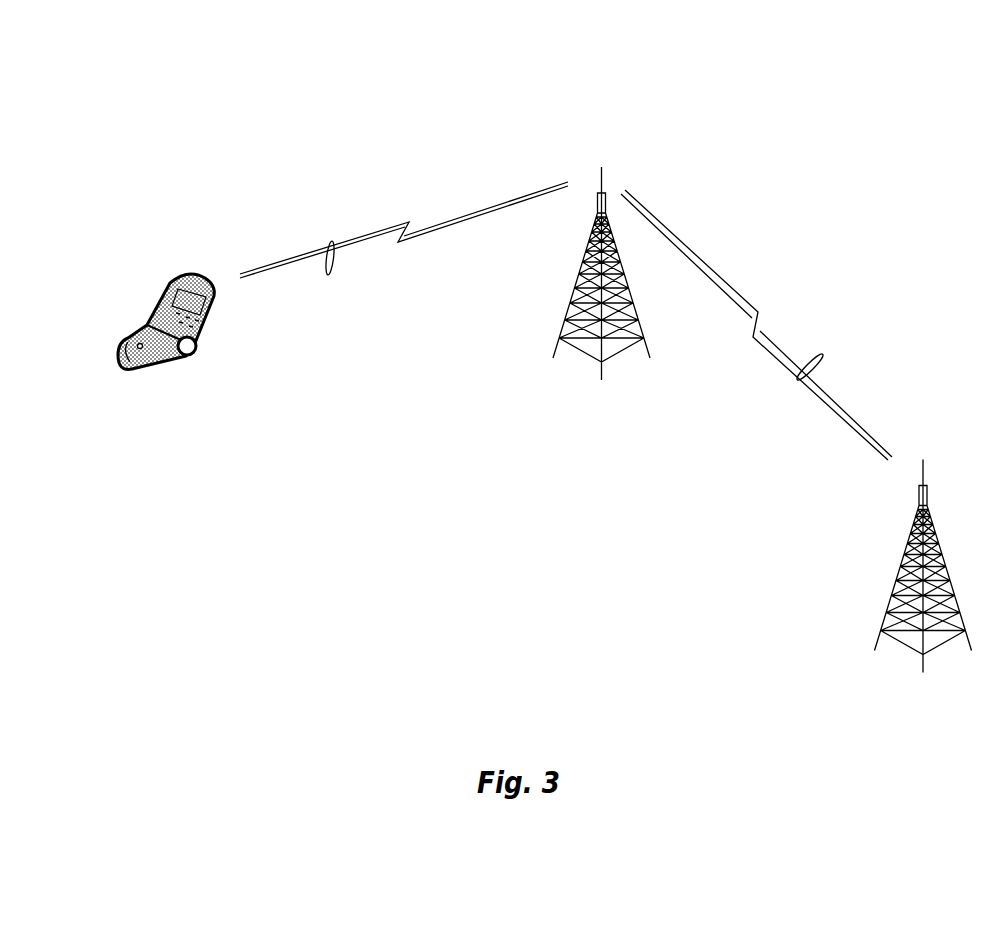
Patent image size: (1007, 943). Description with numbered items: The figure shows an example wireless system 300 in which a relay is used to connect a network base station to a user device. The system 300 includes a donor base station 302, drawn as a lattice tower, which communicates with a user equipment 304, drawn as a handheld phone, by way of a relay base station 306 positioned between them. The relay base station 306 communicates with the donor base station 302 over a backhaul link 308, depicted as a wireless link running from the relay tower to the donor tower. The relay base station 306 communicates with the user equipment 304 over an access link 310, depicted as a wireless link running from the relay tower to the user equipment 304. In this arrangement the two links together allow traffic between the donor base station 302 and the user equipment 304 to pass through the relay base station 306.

The wireless system 300 is at (256, 72).
The donor base station 302 is at (903, 557).
The user equipment 304 is at (163, 308).
The relay base station 306 is at (580, 260).
The backhaul link 308 is at (799, 380).
The access link 310 is at (329, 275).